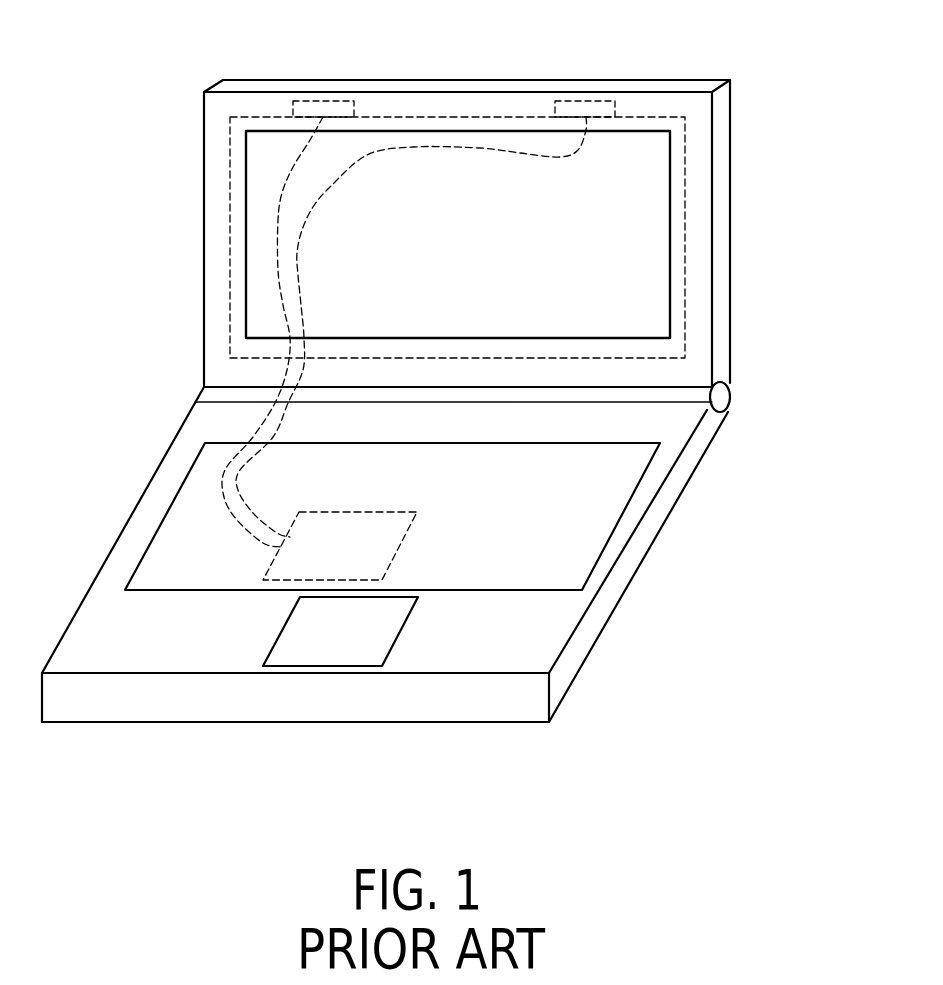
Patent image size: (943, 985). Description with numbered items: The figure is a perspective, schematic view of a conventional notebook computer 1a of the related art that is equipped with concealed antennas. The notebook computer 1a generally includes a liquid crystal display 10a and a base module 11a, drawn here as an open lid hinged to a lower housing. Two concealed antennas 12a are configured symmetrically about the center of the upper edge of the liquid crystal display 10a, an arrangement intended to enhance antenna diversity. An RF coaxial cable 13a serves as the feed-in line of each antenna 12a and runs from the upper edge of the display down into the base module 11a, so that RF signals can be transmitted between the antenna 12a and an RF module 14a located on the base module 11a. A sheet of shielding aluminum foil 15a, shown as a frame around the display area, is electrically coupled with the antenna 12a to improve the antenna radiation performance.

The notebook computer 1a is at (172, 111).
The liquid crystal display (LCD) 10a is at (742, 97).
The base module 11a is at (740, 423).
The concealed antenna 12a is at (325, 110).
The RF coaxial cable 13a is at (278, 250).
The RF module 14a is at (274, 562).
The shielding aluminum foil 15a is at (230, 238).